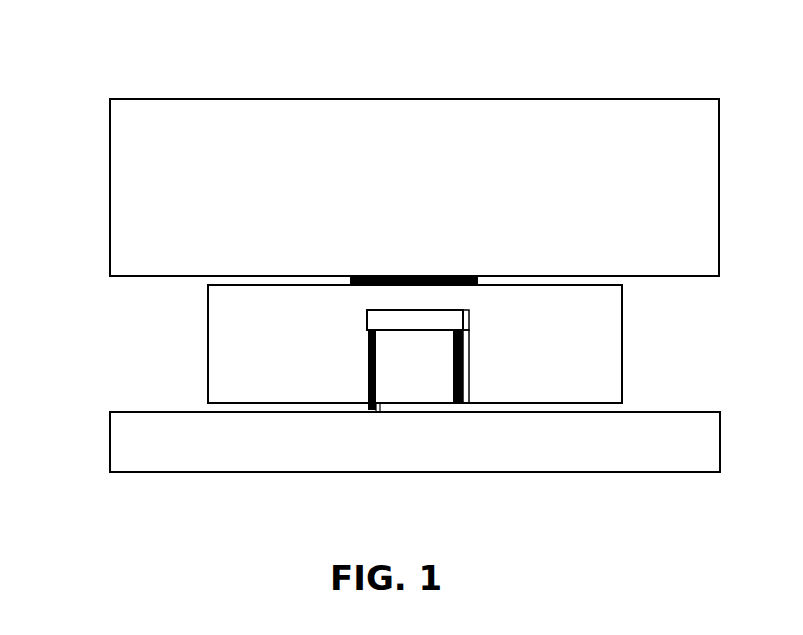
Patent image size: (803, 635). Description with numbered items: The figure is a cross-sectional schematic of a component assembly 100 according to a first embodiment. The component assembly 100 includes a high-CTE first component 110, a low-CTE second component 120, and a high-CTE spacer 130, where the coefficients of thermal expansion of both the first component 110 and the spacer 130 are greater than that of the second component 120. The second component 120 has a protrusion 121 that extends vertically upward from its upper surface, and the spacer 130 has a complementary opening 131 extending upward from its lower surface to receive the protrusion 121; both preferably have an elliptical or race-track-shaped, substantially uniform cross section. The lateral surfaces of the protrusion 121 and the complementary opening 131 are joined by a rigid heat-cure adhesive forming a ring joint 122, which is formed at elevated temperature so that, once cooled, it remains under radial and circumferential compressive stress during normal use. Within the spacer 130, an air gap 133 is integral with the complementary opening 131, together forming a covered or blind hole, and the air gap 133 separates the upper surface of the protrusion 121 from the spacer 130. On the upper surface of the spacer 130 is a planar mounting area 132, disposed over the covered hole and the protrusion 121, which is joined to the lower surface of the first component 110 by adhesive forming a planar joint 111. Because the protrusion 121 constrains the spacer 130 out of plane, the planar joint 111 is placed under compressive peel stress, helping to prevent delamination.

The component assembly 100 is at (123, 76).
The first component 110 is at (110, 190).
The planar joint 111 is at (478, 284).
The second component 120 is at (110, 441).
The protrusion 121 is at (415, 360).
The ring joint 122 is at (375, 407).
The spacer 130 is at (208, 343).
The complementary opening 131 is at (470, 367).
The mounting area 132 is at (372, 288).
The air gap 133 is at (470, 321).